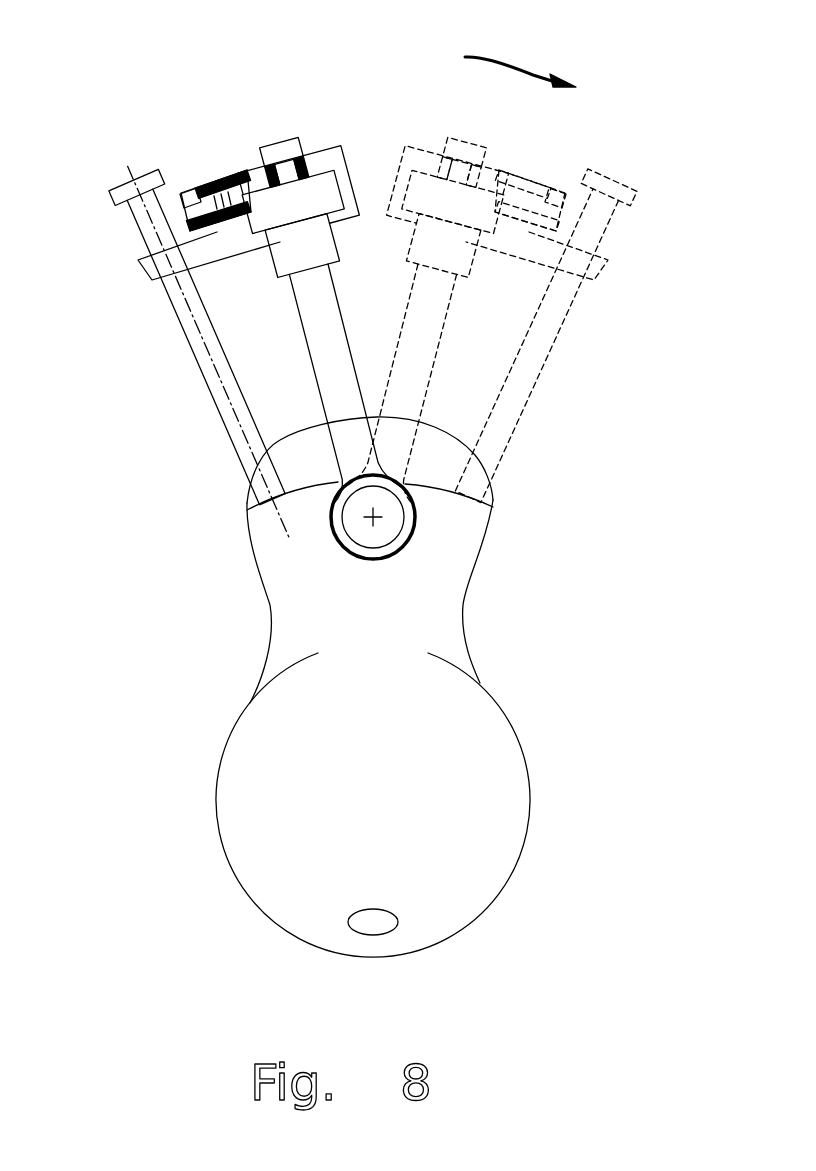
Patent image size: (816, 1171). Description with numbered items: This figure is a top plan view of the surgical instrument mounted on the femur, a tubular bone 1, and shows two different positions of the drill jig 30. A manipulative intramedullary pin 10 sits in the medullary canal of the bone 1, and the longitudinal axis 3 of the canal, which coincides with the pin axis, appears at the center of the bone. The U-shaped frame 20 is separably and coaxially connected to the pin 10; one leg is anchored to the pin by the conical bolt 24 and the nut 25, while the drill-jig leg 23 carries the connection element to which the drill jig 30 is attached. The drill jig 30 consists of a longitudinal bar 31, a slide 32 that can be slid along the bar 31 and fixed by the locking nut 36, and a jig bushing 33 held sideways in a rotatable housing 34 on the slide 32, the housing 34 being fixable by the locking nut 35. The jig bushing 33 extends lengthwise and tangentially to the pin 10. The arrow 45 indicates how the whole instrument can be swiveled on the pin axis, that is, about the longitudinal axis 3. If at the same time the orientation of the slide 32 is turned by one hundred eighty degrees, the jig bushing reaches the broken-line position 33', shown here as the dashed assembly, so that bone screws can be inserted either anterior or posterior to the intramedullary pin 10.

The tubular bone 1 is at (388, 818).
The longitudinal axis 3 is at (378, 518).
The manipulative intramedullary pin 10 is at (359, 603).
The U-shaped frame 20 is at (390, 310).
The drill-jig leg 23 is at (320, 237).
The conical bolt 24 is at (370, 537).
The nut 25 is at (340, 523).
The drill jig 30 is at (84, 238).
The longitudinal bar 31 is at (313, 200).
The slide 32 is at (225, 173).
The jig bushing 33 is at (209, 353).
The jig bushing position 33' is at (482, 317).
The housing 34 is at (155, 268).
The locking nut 35 is at (185, 200).
The locking nut 36 is at (277, 143).
The arrow 45 is at (537, 72).